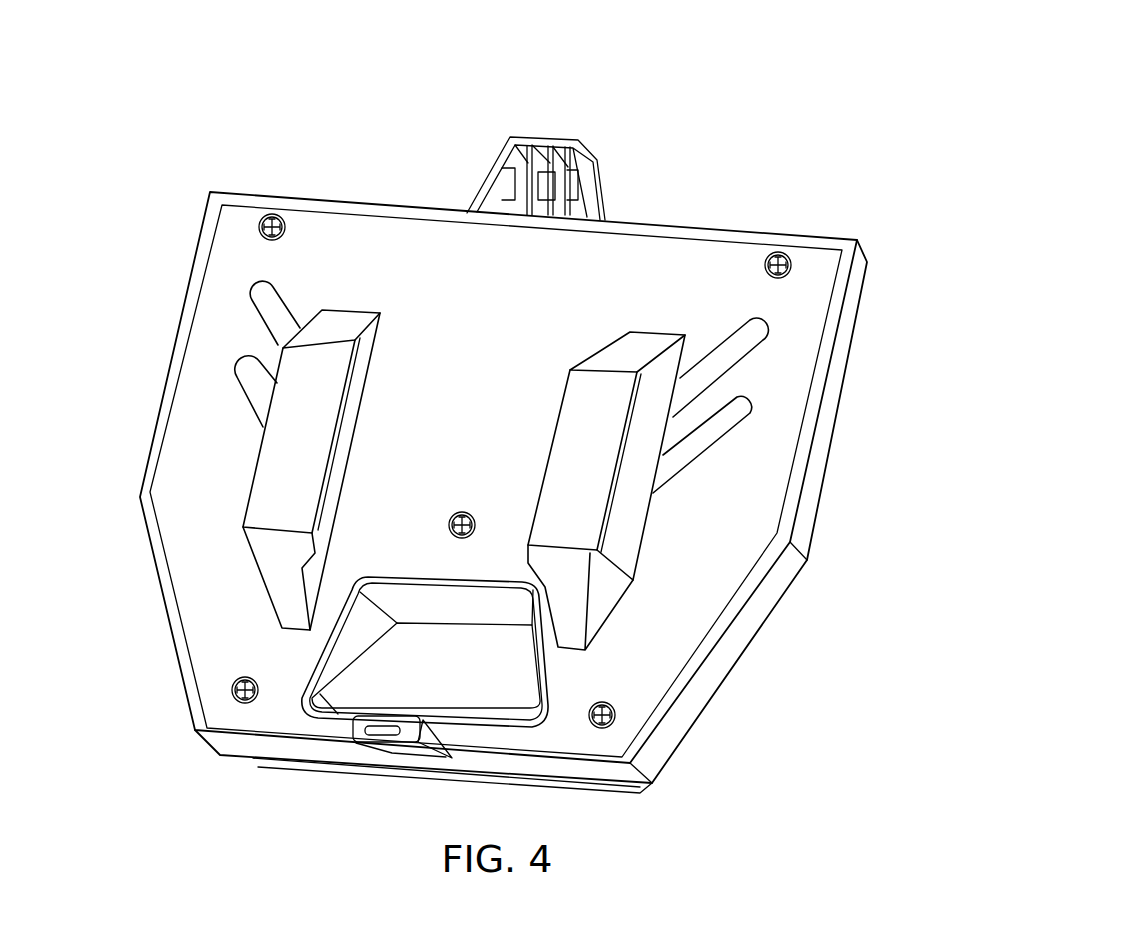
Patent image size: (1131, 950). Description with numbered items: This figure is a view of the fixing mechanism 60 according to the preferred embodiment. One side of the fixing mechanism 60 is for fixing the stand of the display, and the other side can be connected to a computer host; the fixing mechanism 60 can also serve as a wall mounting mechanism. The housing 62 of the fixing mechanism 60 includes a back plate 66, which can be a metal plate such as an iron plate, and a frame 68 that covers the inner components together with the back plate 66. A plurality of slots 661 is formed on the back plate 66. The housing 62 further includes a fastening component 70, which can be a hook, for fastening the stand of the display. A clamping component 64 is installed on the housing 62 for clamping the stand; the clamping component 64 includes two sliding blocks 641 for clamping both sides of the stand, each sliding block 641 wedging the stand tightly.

The fixing mechanism 60 is at (997, 118).
The housing 62 is at (927, 265).
The clamping component 64 is at (498, 82).
The sliding block 641 is at (347, 317).
The back plate 66 is at (810, 300).
The slot 661 is at (266, 316).
The frame 68 is at (842, 340).
The fastening component 70 is at (362, 735).